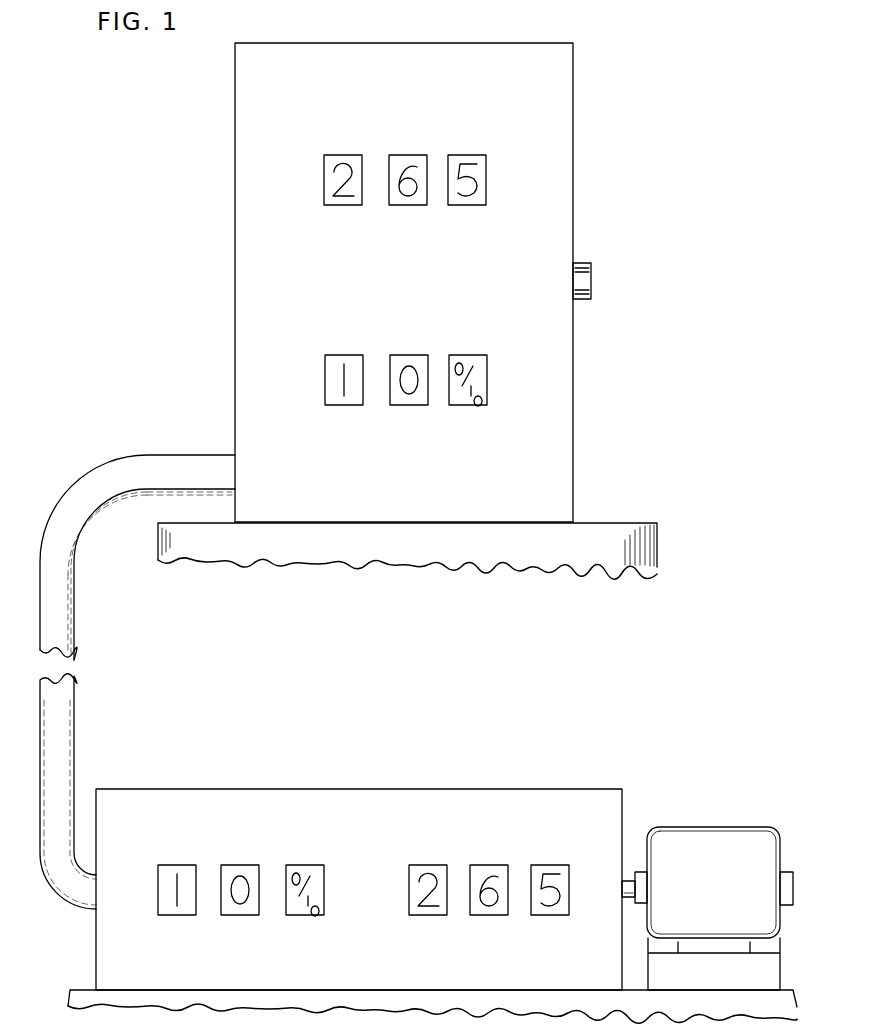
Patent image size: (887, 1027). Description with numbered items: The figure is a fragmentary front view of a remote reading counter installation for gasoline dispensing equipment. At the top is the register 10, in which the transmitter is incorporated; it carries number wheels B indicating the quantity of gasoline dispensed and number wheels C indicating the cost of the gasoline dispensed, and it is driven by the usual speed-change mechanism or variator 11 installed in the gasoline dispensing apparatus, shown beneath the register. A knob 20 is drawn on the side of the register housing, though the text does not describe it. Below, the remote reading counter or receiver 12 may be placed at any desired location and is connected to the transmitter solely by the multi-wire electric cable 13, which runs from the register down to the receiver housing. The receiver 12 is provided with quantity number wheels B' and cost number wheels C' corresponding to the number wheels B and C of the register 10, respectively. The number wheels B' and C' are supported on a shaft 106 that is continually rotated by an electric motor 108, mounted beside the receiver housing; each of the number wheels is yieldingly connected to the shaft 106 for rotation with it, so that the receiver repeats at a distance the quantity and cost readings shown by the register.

The register 10 is at (583, 98).
The variator 11 is at (619, 530).
The receiver 12 is at (596, 788).
The multi-wire electric cable 13 is at (72, 693).
The reset knob 20 is at (593, 266).
The shaft 106 is at (627, 882).
The electric motor 108 is at (692, 836).
The number wheels C is at (405, 156).
The number wheels B is at (406, 359).
The quantity number wheels B' is at (241, 871).
The cost number wheels C' is at (489, 869).